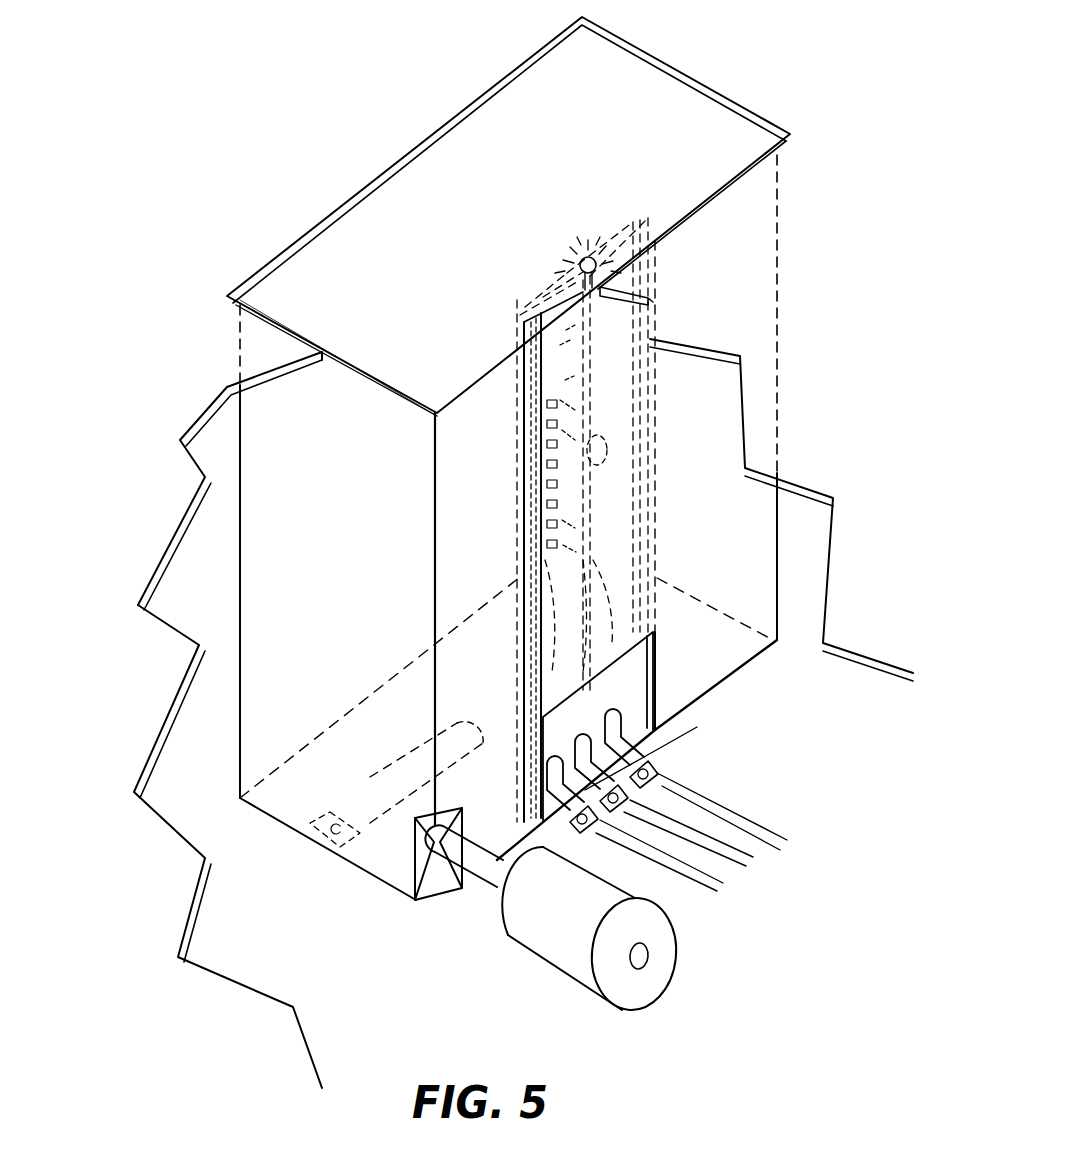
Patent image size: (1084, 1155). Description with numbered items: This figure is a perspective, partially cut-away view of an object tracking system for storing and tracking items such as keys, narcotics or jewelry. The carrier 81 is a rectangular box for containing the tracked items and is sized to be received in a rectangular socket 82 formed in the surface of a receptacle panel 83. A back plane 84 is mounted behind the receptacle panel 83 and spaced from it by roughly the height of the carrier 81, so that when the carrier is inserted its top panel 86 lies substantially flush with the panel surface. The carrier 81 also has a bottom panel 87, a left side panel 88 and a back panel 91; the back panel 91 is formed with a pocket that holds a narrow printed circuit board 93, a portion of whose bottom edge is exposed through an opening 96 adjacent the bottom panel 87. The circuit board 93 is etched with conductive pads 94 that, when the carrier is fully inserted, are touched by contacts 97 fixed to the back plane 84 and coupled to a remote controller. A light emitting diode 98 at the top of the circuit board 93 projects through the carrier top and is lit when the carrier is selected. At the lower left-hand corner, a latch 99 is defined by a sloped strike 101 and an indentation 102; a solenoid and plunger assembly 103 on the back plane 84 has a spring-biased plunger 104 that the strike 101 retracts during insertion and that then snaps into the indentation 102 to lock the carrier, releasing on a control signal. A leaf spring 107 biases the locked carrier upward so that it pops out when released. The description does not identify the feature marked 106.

The carrier 81 is at (162, 666).
The rectangular socket 82 is at (333, 226).
The receptacle panel 83 is at (192, 175).
The back plane 84 is at (733, 763).
The top panel 86 is at (604, 97).
The bottom panel 87 is at (282, 778).
The left side panel 88 is at (273, 565).
The back panel 91 is at (504, 482).
The printed circuit board 93 is at (520, 382).
The conductive pads 94 is at (652, 722).
The opening 96 is at (622, 816).
The contacts 97 is at (623, 752).
The light emitting diode 98 is at (586, 242).
The latch 99 is at (404, 872).
The sloped strike 101 is at (430, 882).
The indentation 102 is at (412, 842).
The solenoid and plunger assembly 103 is at (652, 890).
The plunger 104 is at (485, 872).
The rotation direction 106 is at (498, 845).
The leaf spring 107 is at (383, 790).